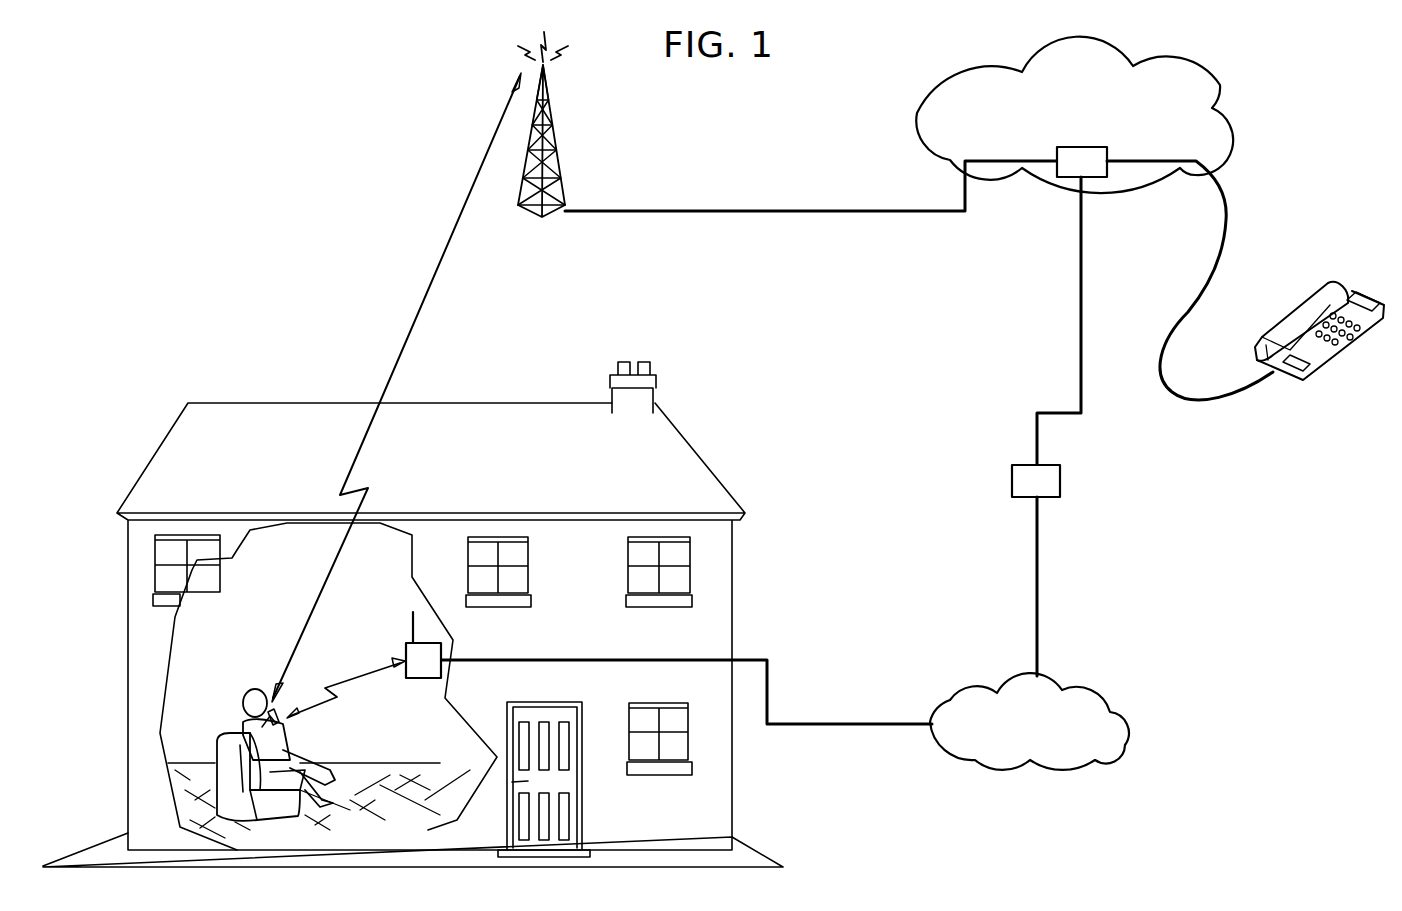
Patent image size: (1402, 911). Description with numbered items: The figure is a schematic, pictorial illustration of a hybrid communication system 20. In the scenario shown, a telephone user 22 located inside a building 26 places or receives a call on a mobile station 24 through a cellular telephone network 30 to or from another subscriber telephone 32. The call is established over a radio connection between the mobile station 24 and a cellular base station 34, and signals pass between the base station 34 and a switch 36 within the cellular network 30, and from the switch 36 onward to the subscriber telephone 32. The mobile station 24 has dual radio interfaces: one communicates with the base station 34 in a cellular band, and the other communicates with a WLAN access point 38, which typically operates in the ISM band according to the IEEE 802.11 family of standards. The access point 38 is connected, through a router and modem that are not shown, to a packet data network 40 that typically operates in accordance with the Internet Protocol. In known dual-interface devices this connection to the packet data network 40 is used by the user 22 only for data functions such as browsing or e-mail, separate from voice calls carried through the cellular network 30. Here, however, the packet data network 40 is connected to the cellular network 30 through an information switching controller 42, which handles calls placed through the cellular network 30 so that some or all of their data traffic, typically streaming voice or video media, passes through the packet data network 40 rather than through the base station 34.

The hybrid communication system 20 is at (290, 176).
The telephone user 22 is at (240, 731).
The mobile station 24 is at (276, 718).
The building 26 is at (255, 419).
The cellular telephone network 30 is at (990, 38).
The subscriber telephone 32 is at (1328, 284).
The cellular base station 34 is at (553, 114).
The switch 36 is at (1090, 178).
The WLAN access point 38 is at (425, 679).
The packet data network 40 is at (966, 691).
The information switching controller 42 is at (1012, 470).